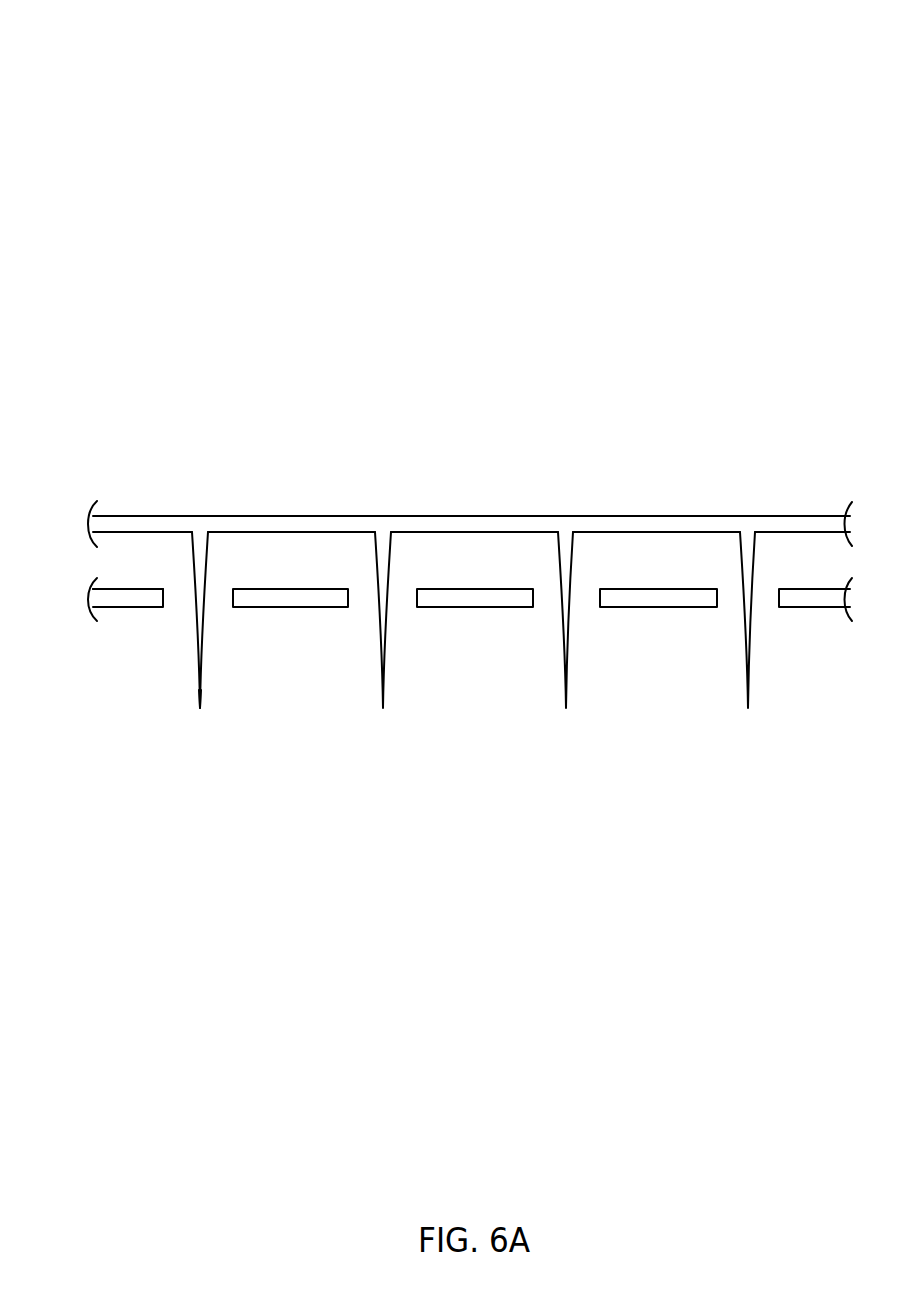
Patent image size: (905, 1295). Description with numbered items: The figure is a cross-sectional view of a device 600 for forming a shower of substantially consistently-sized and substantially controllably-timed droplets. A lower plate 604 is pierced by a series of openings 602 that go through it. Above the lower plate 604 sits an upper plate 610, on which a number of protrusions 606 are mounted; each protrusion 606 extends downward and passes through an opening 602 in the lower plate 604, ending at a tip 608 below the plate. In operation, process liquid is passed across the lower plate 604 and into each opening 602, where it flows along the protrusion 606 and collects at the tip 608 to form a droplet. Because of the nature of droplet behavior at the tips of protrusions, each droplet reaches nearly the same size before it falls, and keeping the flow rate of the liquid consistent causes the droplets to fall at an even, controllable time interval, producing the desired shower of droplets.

The device for forming droplets 600 is at (138, 82).
The opening 602 is at (178, 608).
The lower plate 604 is at (121, 589).
The protrusion 606 is at (203, 564).
The tip 608 is at (201, 707).
The upper plate 610 is at (172, 534).